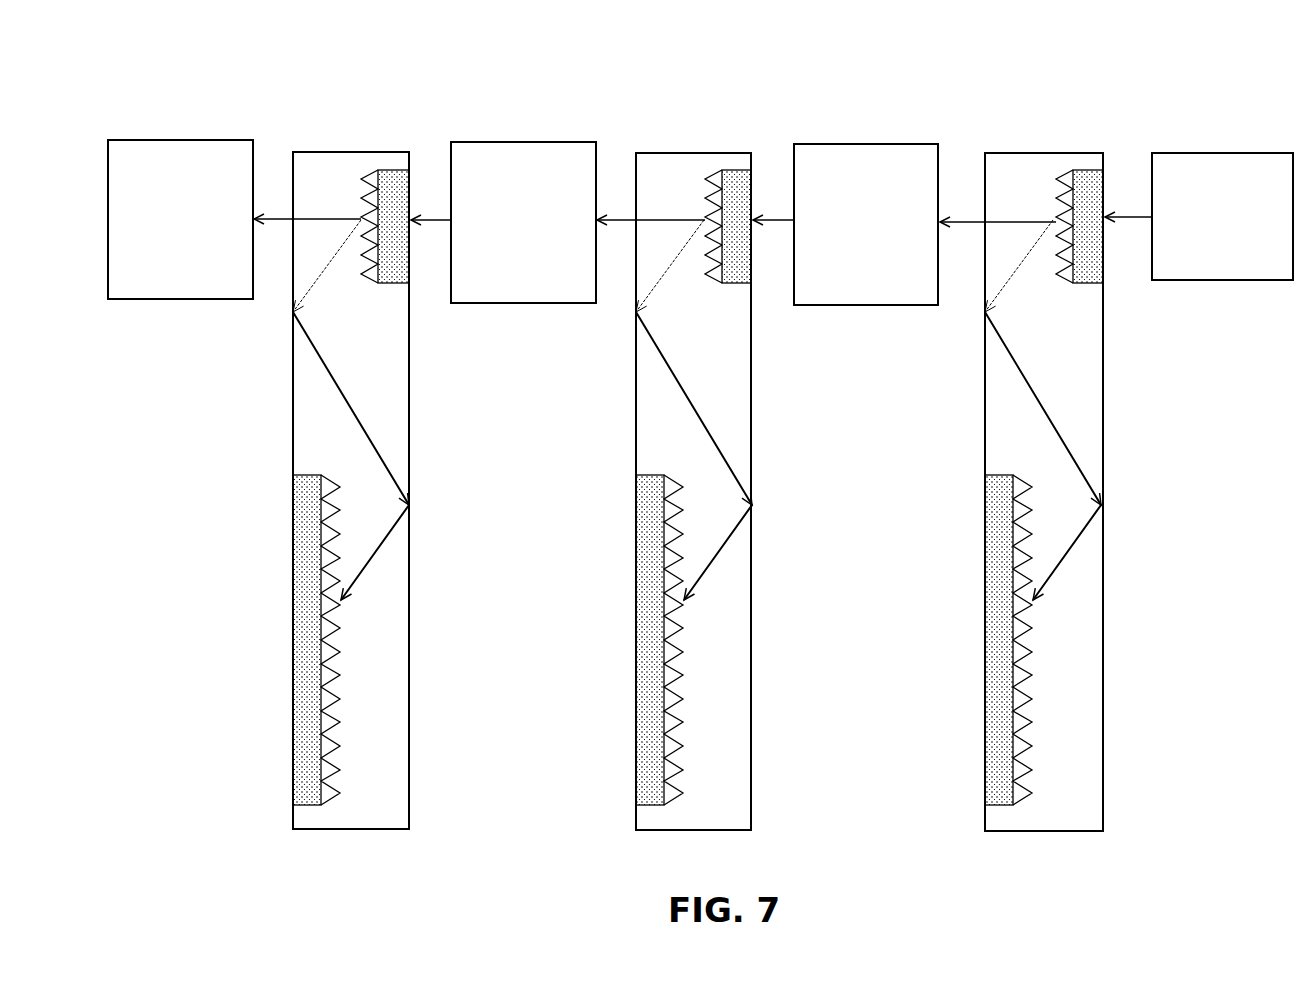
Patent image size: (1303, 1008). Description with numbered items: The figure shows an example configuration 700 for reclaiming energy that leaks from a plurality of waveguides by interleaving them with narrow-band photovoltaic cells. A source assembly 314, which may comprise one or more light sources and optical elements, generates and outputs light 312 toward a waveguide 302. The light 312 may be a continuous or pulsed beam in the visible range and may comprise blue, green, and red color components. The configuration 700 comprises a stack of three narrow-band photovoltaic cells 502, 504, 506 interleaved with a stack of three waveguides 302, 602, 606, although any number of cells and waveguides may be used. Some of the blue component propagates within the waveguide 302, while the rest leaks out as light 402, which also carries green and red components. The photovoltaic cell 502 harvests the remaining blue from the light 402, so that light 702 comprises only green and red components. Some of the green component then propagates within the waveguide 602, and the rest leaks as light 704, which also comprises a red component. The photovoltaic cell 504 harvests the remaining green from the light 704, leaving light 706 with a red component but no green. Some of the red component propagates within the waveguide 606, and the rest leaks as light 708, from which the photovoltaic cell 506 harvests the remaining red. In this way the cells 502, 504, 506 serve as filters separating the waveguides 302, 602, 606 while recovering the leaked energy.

The configuration 700 is at (698, 14).
The photovoltaic cell 506 is at (180, 219).
The photovoltaic cell 504 is at (523, 222).
The photovoltaic cell 502 is at (866, 224).
The source assembly 314 is at (1222, 216).
The waveguide 606 is at (381, 648).
The waveguide 602 is at (725, 650).
The waveguide 302 is at (1082, 658).
The light 708 is at (266, 218).
The light 706 is at (428, 219).
The light 704 is at (607, 219).
The light 702 is at (772, 219).
The light 402 is at (954, 221).
The light 312 is at (1129, 218).